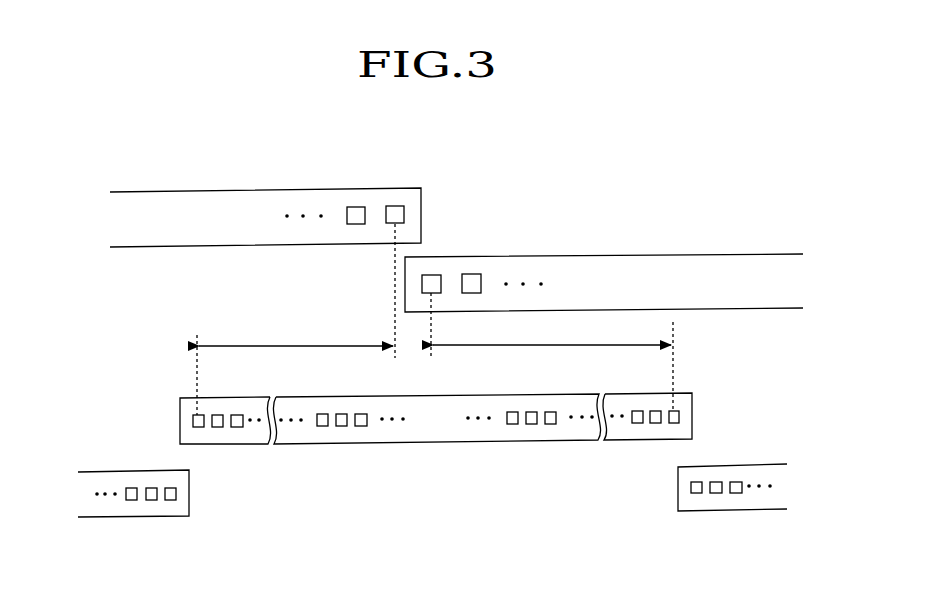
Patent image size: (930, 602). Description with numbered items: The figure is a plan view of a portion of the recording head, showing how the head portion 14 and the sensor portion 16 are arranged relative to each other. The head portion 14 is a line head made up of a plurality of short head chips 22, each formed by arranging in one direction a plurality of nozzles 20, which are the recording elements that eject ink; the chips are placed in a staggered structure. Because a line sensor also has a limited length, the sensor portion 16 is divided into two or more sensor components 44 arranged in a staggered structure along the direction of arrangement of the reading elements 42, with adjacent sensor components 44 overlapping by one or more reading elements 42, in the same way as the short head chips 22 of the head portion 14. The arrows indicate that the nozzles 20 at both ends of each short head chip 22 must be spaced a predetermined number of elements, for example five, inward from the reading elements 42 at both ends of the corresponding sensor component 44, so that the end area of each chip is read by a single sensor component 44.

The head portion 14 is at (758, 240).
The sensor portion 16 is at (783, 422).
The nozzle 20 is at (395, 212).
The short head chip 22 is at (196, 215).
The reading element 42 is at (360, 434).
The sensor component 44 is at (476, 436).